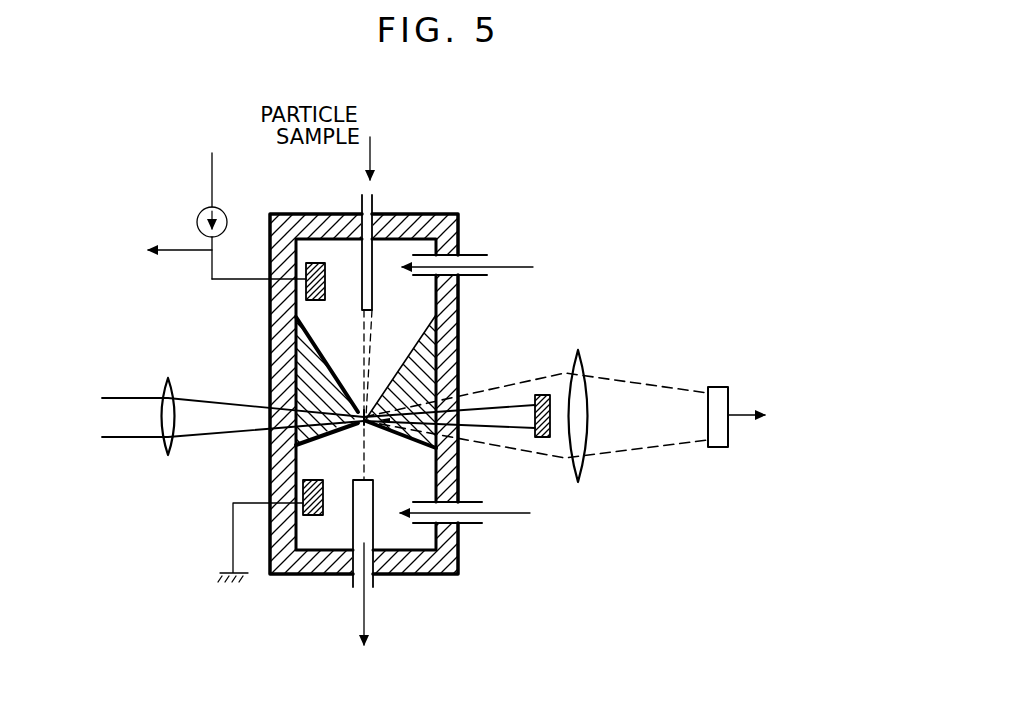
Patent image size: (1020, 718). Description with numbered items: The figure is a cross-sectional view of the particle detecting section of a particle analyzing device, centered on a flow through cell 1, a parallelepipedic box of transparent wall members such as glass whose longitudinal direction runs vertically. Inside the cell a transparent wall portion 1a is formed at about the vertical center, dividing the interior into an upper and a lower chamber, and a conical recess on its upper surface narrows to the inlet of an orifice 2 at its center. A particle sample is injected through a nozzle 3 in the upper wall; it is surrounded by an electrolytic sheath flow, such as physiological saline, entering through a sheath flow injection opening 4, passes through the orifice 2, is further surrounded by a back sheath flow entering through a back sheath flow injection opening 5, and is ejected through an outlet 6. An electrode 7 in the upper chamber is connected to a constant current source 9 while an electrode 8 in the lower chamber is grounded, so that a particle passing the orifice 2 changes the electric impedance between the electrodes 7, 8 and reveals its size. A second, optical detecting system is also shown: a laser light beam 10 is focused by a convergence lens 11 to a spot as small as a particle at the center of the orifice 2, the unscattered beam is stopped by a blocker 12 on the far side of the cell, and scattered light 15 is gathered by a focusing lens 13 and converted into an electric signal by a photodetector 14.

The flow through cell 1 is at (270, 352).
The transparent wall portion 1a is at (440, 352).
The orifice 2 is at (368, 424).
The nozzle 3 is at (374, 205).
The sheath flow injection opening 4 is at (470, 256).
The back sheath flow injection opening 5 is at (462, 525).
The outlet 6 is at (376, 580).
The electrode 7 is at (313, 263).
The electrode 8 is at (315, 516).
The constant current source 9 is at (220, 209).
The laser light beam 10 is at (124, 420).
The convergence lens 11 is at (175, 436).
The blocker 12 is at (537, 395).
The focusing lens 13 is at (585, 365).
The photodetector 14 is at (712, 387).
The scattered light 15 is at (643, 452).